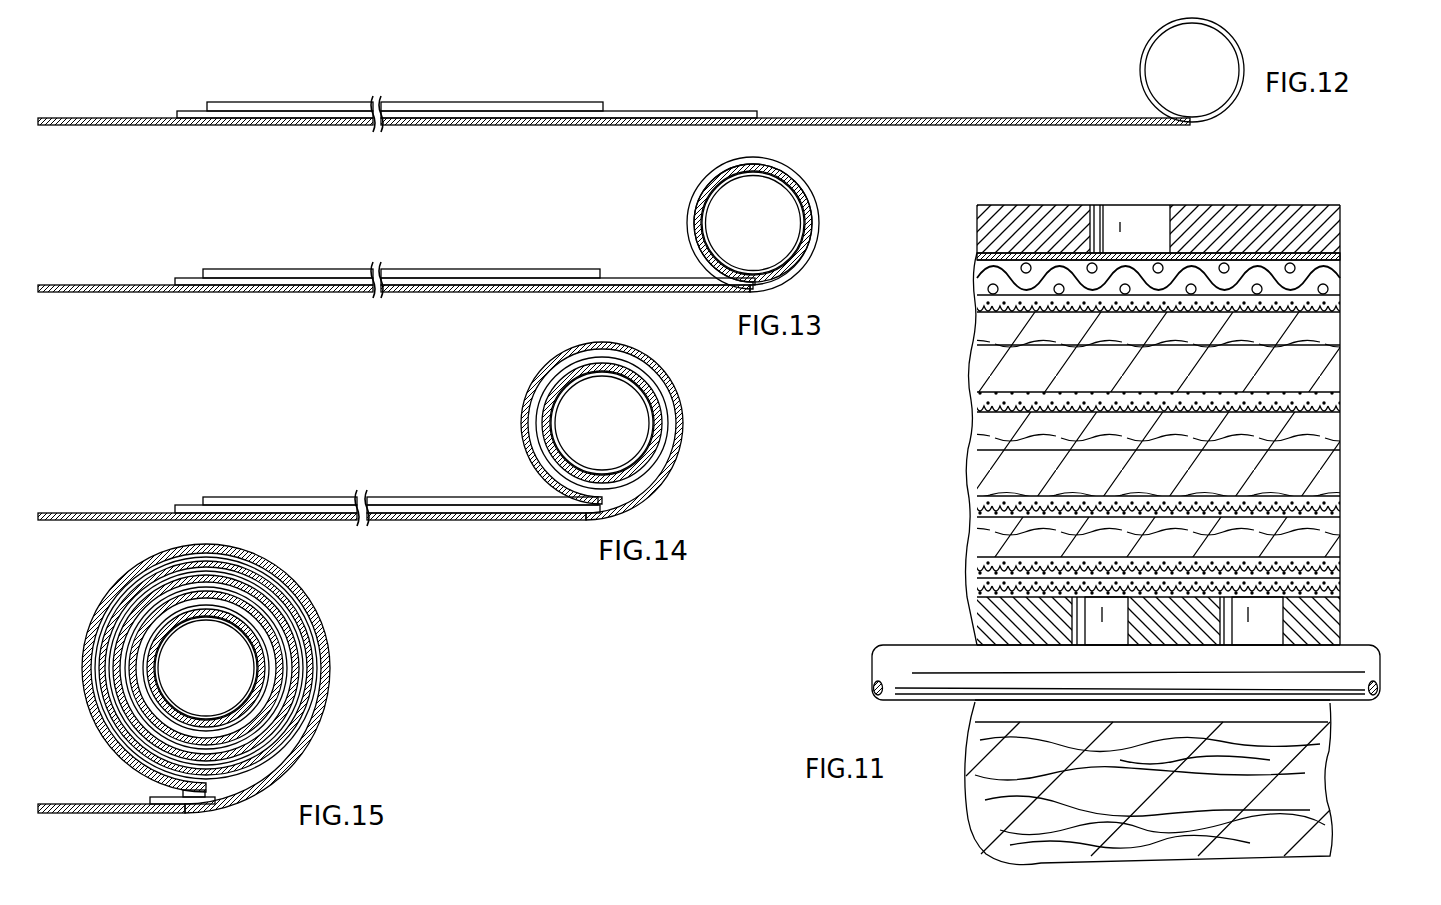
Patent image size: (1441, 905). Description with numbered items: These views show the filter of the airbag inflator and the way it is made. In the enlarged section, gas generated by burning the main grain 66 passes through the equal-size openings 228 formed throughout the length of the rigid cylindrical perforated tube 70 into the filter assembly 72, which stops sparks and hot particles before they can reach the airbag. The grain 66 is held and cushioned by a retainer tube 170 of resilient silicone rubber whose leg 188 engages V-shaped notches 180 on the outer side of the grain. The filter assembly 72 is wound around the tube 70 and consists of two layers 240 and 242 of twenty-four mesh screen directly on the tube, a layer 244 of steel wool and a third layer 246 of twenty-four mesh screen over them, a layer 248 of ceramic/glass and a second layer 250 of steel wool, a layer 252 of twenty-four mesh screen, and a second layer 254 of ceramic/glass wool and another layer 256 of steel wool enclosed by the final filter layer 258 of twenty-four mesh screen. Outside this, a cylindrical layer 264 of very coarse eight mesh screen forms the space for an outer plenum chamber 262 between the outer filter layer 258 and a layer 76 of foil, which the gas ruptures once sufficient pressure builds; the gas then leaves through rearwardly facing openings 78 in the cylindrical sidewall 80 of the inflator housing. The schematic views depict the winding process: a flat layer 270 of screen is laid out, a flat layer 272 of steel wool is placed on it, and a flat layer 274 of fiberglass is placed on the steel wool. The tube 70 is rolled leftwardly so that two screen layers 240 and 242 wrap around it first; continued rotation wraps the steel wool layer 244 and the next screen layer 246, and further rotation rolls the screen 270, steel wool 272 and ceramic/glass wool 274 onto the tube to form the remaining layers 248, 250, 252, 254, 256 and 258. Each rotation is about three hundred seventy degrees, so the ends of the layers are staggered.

In FIG. 11, the main grain 66 is at (960, 816).
In FIG. 12, the rigid cylindrical perforated tube 70 is at (1141, 71).
In FIG. 13, the rigid cylindrical perforated tube 70 is at (706, 226).
In FIG. 14, the rigid cylindrical perforated tube 70 is at (557, 440).
In FIG. 15, the rigid cylindrical perforated tube 70 is at (167, 637).
In FIG. 11, the rigid cylindrical perforated tube 70 is at (1342, 630).
In FIG. 11, the filter assembly 72 is at (1157, 406).
In FIG. 11, the layer of foil 76 is at (977, 258).
In FIG. 11, the rearwardly facing openings 78 is at (1142, 222).
In FIG. 11, the cylindrical sidewall 80 is at (1233, 208).
In FIG. 11, the retainer tube 170 is at (1382, 688).
In FIG. 11, the V-shaped notches 180 is at (986, 709).
In FIG. 11, the leg 188 is at (1346, 686).
In FIG. 11, the openings 228 is at (1245, 622).
In FIG. 13, the layer of 24 mesh screen 240 is at (801, 194).
In FIG. 11, the layer of 24 mesh screen 240 is at (985, 586).
In FIG. 13, the layer of 24 mesh screen 242 is at (816, 204).
In FIG. 11, the layer of 24 mesh screen 242 is at (985, 566).
In FIG. 14, the layer of steel wool 244 is at (536, 428).
In FIG. 11, the layer of steel wool 244 is at (985, 538).
In FIG. 14, the third layer of 24 mesh screen 246 is at (536, 462).
In FIG. 11, the third layer of 24 mesh screen 246 is at (985, 506).
In FIG. 15, the layer of ceramic/glass 248 is at (257, 608).
In FIG. 11, the layer of ceramic/glass 248 is at (990, 462).
In FIG. 15, the second layer of steel wool 250 is at (278, 618).
In FIG. 11, the second layer of steel wool 250 is at (990, 430).
In FIG. 15, the layer of 24 mesh screen 252 is at (297, 630).
In FIG. 11, the layer of 24 mesh screen 252 is at (990, 403).
In FIG. 15, the second layer of ceramic/glass wool 254 is at (307, 650).
In FIG. 11, the second layer of ceramic/glass wool 254 is at (1000, 367).
In FIG. 15, the layer of steel wool 256 is at (318, 667).
In FIG. 11, the layer of steel wool 256 is at (1002, 322).
In FIG. 15, the final filter layer of 24 mesh screen 258 is at (327, 692).
In FIG. 11, the final filter layer of 24 mesh screen 258 is at (976, 300).
In FIG. 11, the outer plenum chamber 262 is at (975, 266).
In FIG. 11, the layer of 8 mesh screen 264 is at (976, 287).
In FIG. 12, the flat layer of screen 270 is at (900, 122).
In FIG. 13, the flat layer of screen 270 is at (394, 288).
In FIG. 14, the flat layer of screen 270 is at (128, 513).
In FIG. 12, the flat layer of steel wool 272 is at (718, 114).
In FIG. 13, the flat layer of steel wool 272 is at (638, 280).
In FIG. 14, the flat layer of steel wool 272 is at (189, 512).
In FIG. 12, the flat layer of fiberglass 274 is at (563, 106).
In FIG. 13, the flat layer of fiberglass 274 is at (548, 272).
In FIG. 14, the flat layer of fiberglass 274 is at (419, 503).